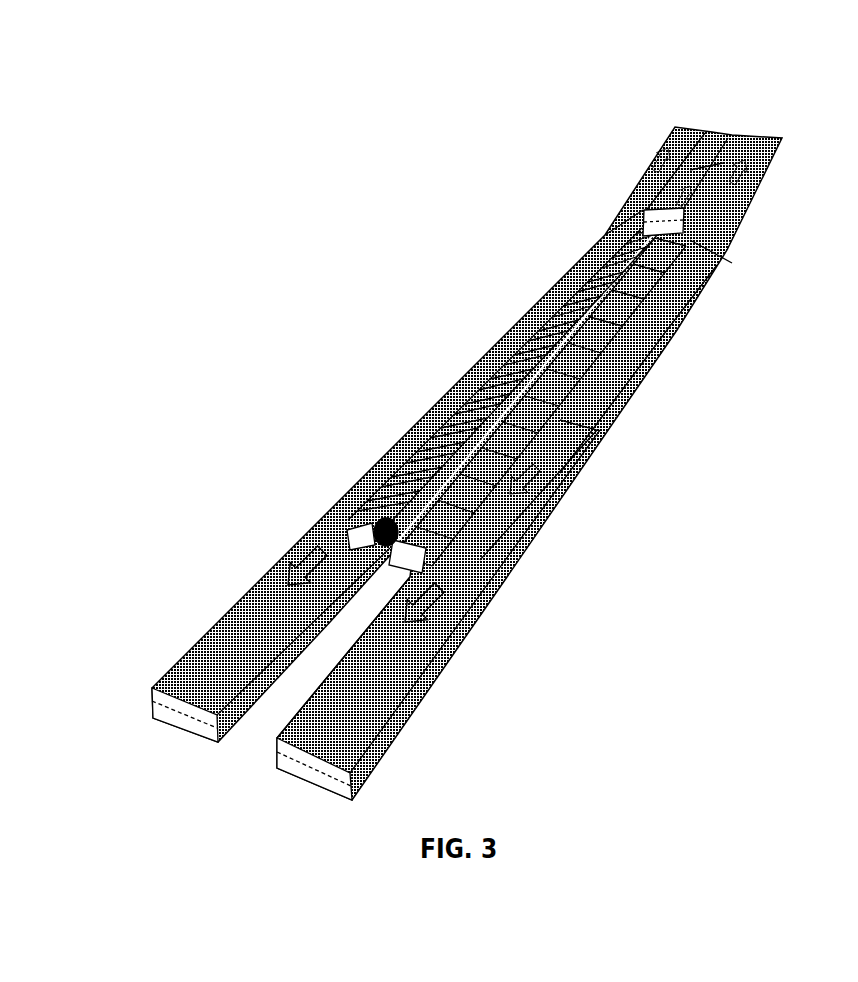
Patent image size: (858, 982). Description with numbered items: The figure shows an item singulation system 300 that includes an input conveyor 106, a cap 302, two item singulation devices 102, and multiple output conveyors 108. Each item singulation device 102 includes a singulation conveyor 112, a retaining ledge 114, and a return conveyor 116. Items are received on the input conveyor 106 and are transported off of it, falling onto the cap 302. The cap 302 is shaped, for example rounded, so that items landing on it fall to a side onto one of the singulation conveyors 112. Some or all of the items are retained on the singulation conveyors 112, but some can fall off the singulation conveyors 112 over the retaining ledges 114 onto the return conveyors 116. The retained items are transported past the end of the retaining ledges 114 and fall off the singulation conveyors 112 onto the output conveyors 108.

The item singulation system 300 is at (205, 165).
The item singulation device 102 is at (380, 420).
The input conveyor 106 is at (728, 140).
The output conveyor 108 is at (222, 653).
The singulation conveyor 112 is at (520, 363).
The retaining ledge 114 is at (563, 302).
The return conveyor 116 is at (458, 405).
The cap 302 is at (395, 513).